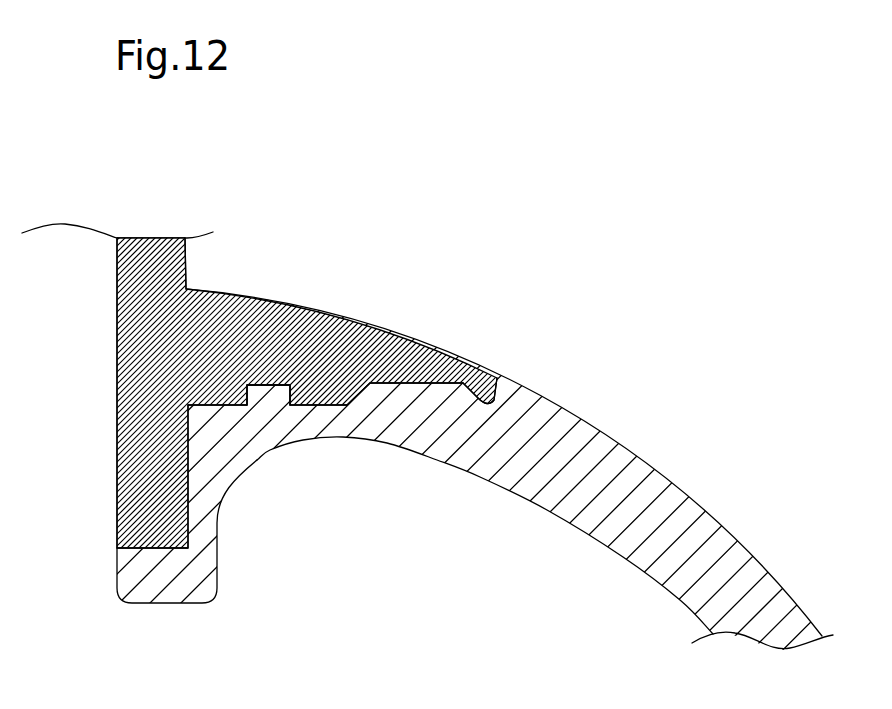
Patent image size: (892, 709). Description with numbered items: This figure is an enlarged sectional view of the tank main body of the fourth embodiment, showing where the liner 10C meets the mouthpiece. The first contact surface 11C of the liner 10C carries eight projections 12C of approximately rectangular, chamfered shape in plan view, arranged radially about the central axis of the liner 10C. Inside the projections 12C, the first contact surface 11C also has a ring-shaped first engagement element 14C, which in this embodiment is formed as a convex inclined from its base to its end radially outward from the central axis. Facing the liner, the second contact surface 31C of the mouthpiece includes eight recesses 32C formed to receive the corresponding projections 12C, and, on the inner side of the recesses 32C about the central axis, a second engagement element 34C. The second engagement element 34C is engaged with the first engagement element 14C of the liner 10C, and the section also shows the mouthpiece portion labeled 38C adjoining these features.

The liner 10C is at (655, 448).
The first contact surface 11C is at (232, 402).
The projection 12C is at (407, 392).
The first engagement element 14C is at (267, 397).
The second contact surface 31C is at (190, 404).
The recess 32C is at (455, 382).
The second engagement element 34C is at (300, 389).
The rim 38C is at (344, 325).